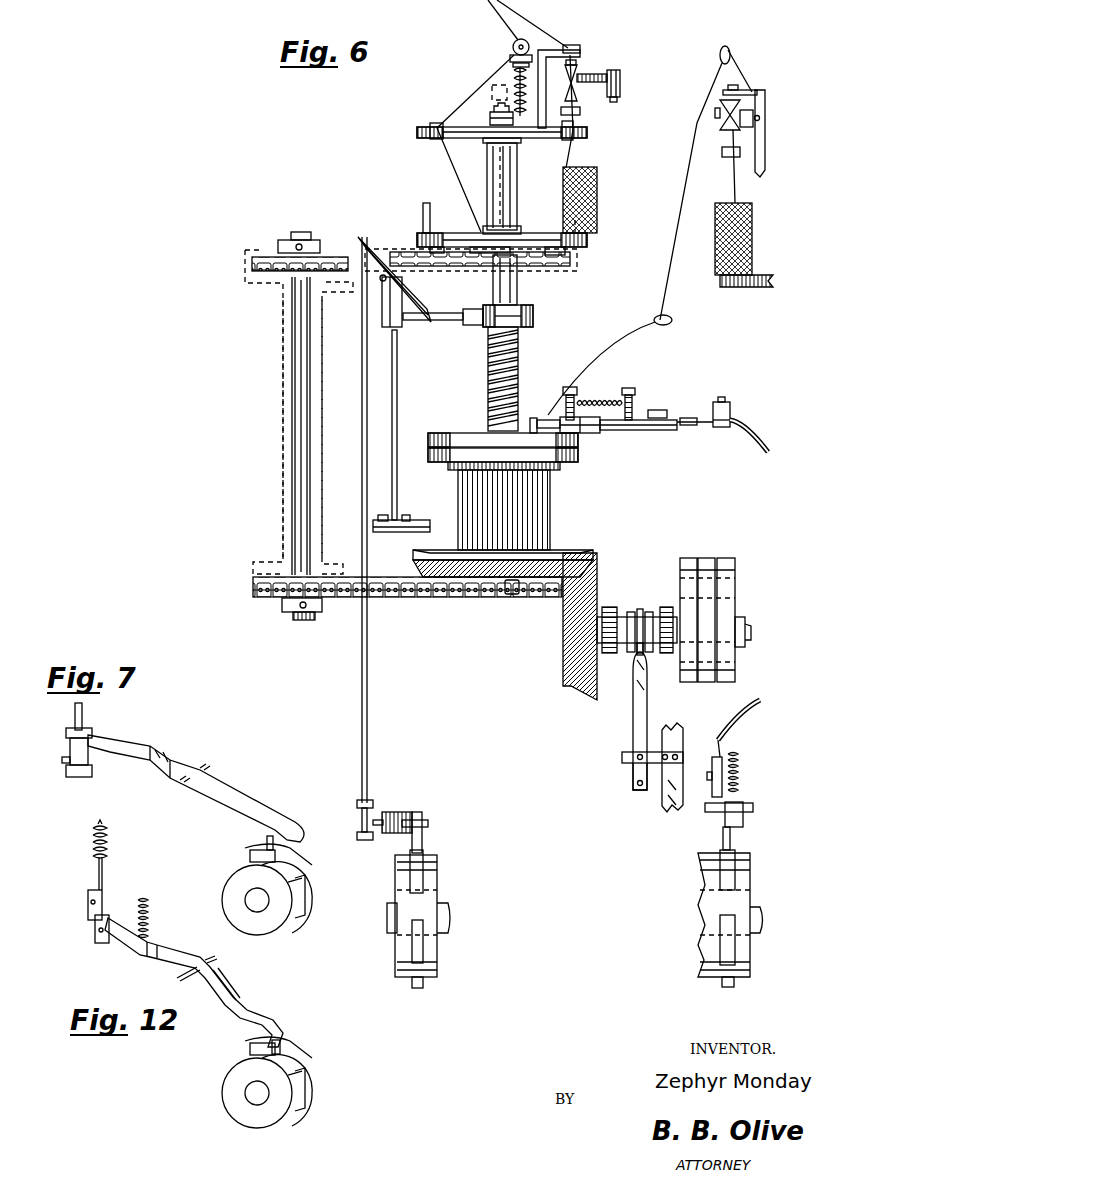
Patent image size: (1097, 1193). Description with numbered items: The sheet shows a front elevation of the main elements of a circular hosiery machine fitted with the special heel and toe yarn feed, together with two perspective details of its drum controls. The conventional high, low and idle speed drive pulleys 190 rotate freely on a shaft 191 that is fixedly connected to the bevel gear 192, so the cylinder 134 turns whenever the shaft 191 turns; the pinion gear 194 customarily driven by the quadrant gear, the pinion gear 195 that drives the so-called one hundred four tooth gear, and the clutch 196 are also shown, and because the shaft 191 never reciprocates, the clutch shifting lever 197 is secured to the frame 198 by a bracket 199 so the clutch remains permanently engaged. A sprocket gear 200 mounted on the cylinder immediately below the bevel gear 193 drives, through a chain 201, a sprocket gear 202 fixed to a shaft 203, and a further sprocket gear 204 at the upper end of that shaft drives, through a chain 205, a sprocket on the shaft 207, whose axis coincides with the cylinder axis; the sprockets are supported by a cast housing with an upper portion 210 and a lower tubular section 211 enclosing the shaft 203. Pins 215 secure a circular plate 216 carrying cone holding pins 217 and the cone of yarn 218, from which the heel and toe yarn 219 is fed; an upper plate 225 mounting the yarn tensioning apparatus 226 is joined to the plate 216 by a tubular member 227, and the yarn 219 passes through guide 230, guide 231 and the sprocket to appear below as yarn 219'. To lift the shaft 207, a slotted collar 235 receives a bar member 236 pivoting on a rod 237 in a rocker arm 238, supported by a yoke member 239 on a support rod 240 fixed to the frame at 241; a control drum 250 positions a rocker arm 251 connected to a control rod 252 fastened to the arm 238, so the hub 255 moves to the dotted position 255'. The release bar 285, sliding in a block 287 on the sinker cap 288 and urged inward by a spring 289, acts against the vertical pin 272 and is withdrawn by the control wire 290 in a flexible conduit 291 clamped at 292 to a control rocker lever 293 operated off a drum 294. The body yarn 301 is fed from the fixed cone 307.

In FIG. 6, the cylinder 134 is at (553, 490).
In FIG. 6, the drive pulleys 190 is at (722, 541).
In FIG. 6, the shaft 191 is at (745, 620).
In FIG. 6, the bevel gear 192 is at (596, 690).
In FIG. 6, the bevel gear 193 is at (562, 553).
In FIG. 6, the pinion gear 194 is at (608, 610).
In FIG. 6, the pinion gear 195 is at (665, 608).
In FIG. 6, the clutch 196 is at (638, 612).
In FIG. 6, the clutch shifting lever 197 is at (635, 725).
In FIG. 6, the frame 198 is at (680, 810).
In FIG. 6, the bracket 199 is at (656, 770).
In FIG. 6, the sprocket gear 200 is at (512, 596).
In FIG. 6, the chain 201 is at (430, 598).
In FIG. 6, the sprocket gear 202 is at (284, 600).
In FIG. 6, the shaft 203 is at (296, 443).
In FIG. 6, the sprocket gear 204 is at (277, 272).
In FIG. 6, the chain 205 is at (333, 252).
In FIG. 6, the shaft 207 is at (517, 197).
In FIG. 6, the upper portion of cast housing 210 is at (580, 262).
In FIG. 6, the lower tubular section 211 is at (280, 400).
In FIG. 6, the pins 215 is at (598, 247).
In FIG. 6, the circular plate 216 is at (420, 236).
In FIG. 6, the cone holding pins 217 is at (580, 232).
In FIG. 6, the cone of yarn 218 is at (598, 190).
In FIG. 6, the yarn 219 is at (533, 285).
In FIG. 6, the yarn 219' is at (476, 280).
In FIG. 6, the circular plate 225 is at (458, 140).
In FIG. 6, the yarn tensioning apparatus 226 is at (603, 51).
In FIG. 6, the tubular member 227 is at (517, 200).
In FIG. 6, the guide 230 is at (433, 124).
In FIG. 6, the guide 231 is at (481, 232).
In FIG. 6, the slotted collar 235 is at (540, 312).
In FIG. 6, the bar member 236 is at (472, 326).
In FIG. 6, the rod 237 is at (455, 321).
In FIG. 6, the rocker arm 238 is at (412, 320).
In FIG. 6, the yoke member 239 is at (382, 322).
In FIG. 6, the support rod 240 is at (398, 455).
In FIG. 6, the frame fixing 241 is at (425, 530).
In FIG. 6, the control drum 250 is at (438, 878).
In FIG. 7, the control drum 250 is at (315, 878).
In FIG. 6, the rocker arm 251 is at (420, 840).
In FIG. 7, the rocker arm 251 is at (255, 797).
In FIG. 6, the control rod 252 is at (367, 720).
In FIG. 7, the control rod 252 is at (82, 718).
In FIG. 6, the hub 255 is at (481, 106).
In FIG. 6, the hub raised position 255' is at (464, 75).
In FIG. 6, the vertical pin 272 is at (533, 417).
In FIG. 6, the release bar 285 is at (548, 415).
In FIG. 6, the block 287 is at (585, 432).
In FIG. 6, the sinker cap 288 is at (456, 437).
In FIG. 6, the spring 289 is at (602, 400).
In FIG. 6, the control wire 290 is at (714, 422).
In FIG. 12, the control wire 290 is at (103, 878).
In FIG. 6, the flexible conduit 291 is at (762, 450).
In FIG. 12, the flexible conduit 291 is at (107, 843).
In FIG. 6, the clamp 292 is at (730, 408).
In FIG. 6, the control rocker lever 293 is at (733, 840).
In FIG. 12, the control rocker lever 293 is at (247, 1000).
In FIG. 6, the drum 294 is at (752, 883).
In FIG. 12, the drum 294 is at (310, 1073).
In FIG. 6, the body yarn 301 is at (700, 127).
In FIG. 6, the fixed cone 307 is at (750, 252).